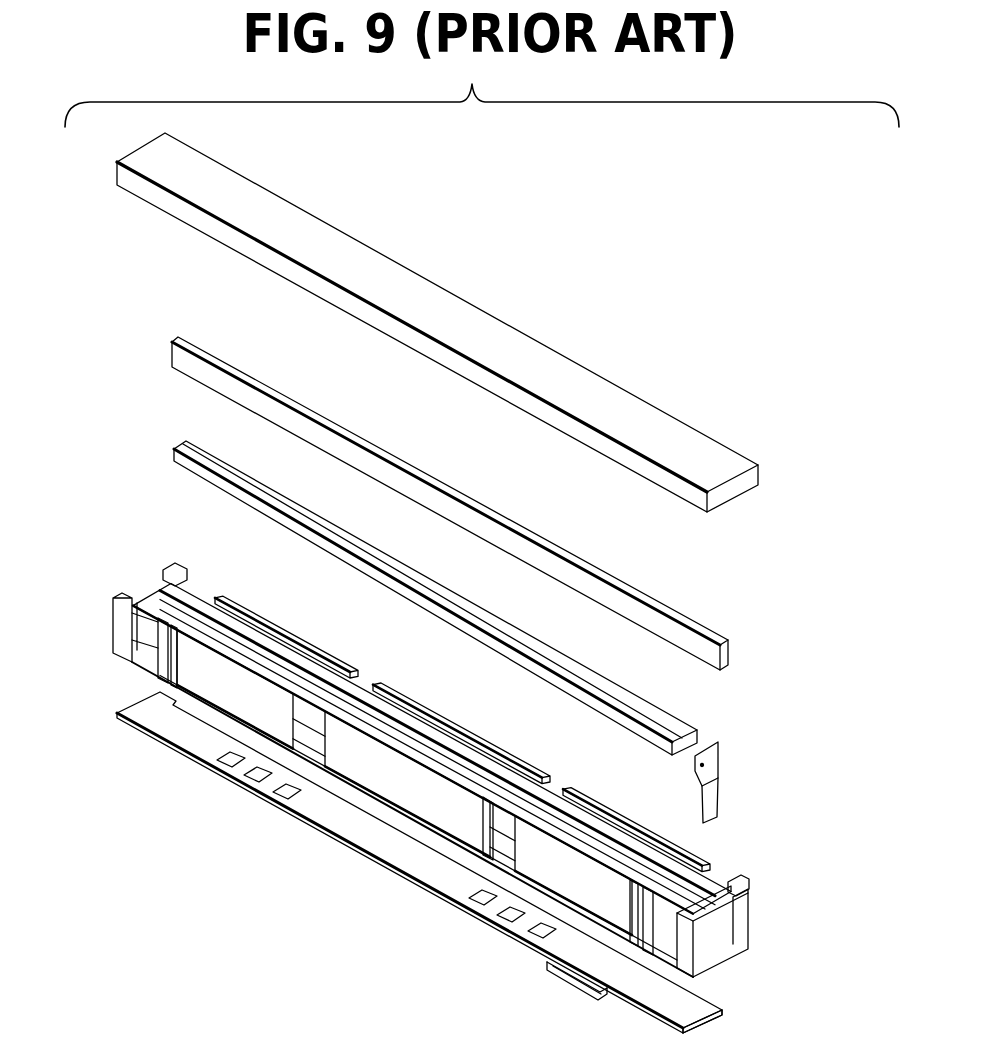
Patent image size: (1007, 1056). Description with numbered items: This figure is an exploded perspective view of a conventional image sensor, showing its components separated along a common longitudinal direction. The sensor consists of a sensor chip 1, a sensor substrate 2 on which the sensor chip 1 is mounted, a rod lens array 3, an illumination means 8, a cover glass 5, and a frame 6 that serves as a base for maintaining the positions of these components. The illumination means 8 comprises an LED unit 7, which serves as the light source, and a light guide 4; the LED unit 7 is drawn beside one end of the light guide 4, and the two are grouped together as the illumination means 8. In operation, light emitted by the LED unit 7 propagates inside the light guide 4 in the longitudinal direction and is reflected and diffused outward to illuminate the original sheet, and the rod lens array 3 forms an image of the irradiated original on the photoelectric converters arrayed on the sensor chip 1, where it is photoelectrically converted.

The sensor chip 1 is at (695, 1000).
The sensor substrate 2 is at (362, 832).
The rod lens array 3 is at (693, 640).
The light guide 4 is at (645, 708).
The cover glass 5 is at (705, 448).
The frame 6 is at (713, 872).
The LED unit 7 is at (713, 755).
The illumination means 8 is at (523, 632).